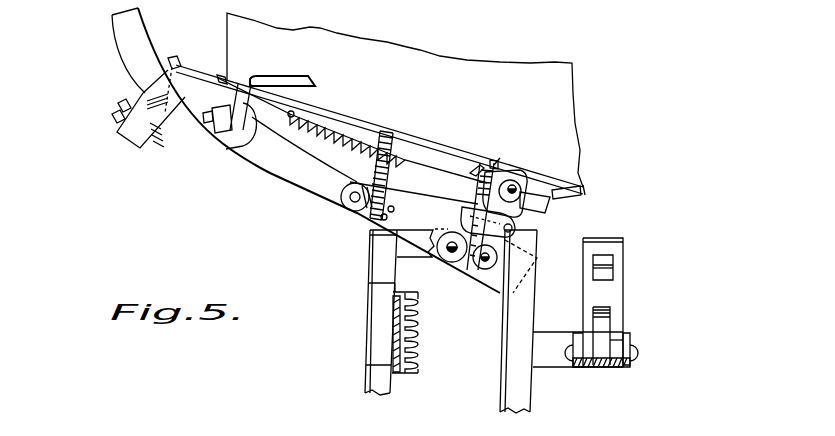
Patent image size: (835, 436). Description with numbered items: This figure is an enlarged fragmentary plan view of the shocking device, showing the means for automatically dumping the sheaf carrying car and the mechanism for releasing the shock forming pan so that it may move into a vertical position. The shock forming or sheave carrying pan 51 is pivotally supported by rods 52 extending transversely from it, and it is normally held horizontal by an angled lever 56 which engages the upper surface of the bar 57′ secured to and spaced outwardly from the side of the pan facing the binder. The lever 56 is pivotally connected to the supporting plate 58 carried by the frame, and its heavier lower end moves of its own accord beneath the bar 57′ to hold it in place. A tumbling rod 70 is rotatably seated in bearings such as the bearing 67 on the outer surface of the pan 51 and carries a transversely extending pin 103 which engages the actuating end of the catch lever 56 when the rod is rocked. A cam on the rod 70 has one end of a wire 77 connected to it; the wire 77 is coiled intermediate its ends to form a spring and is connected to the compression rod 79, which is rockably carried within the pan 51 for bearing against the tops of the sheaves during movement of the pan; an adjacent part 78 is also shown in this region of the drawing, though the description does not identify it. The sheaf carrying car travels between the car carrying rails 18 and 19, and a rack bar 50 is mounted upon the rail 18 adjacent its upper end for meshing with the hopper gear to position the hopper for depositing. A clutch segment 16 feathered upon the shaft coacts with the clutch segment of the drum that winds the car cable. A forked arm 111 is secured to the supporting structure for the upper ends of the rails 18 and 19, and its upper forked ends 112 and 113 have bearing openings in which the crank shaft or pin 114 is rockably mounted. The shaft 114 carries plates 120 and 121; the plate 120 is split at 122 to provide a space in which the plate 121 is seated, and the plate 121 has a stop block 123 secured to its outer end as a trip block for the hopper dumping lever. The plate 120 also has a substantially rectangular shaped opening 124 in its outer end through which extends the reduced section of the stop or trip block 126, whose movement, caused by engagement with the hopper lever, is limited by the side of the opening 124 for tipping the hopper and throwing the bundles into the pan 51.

The shock forming or sheave carrying pan 51 is at (479, 72).
The compression rod 79 is at (228, 133).
The nut and post 78 is at (267, 117).
The wire 77 is at (350, 157).
The rods 52 is at (343, 181).
The clutch segment 16 is at (444, 202).
The angled lever 56 is at (495, 165).
The supporting plate 58 is at (478, 165).
The transversely extending pin 103 is at (495, 160).
The tumbling rod 70 is at (523, 183).
The bearing 67 is at (513, 166).
The bar 57′ is at (530, 210).
The car carrying rail 18 is at (370, 386).
The rack bar 50 is at (418, 335).
The car carrying rail 19 is at (515, 388).
The forked arm 111 is at (540, 340).
The upper forked end 113 is at (577, 367).
The upper forked end 112 is at (630, 338).
The crank shaft or pin 114 is at (637, 360).
The split 122 is at (602, 368).
The plate 120 is at (617, 298).
The substantially rectangular shaped opening 124 is at (607, 260).
The stop or trip block 126 is at (607, 273).
The plate 121 is at (603, 330).
The stop block 123 is at (692, 300).